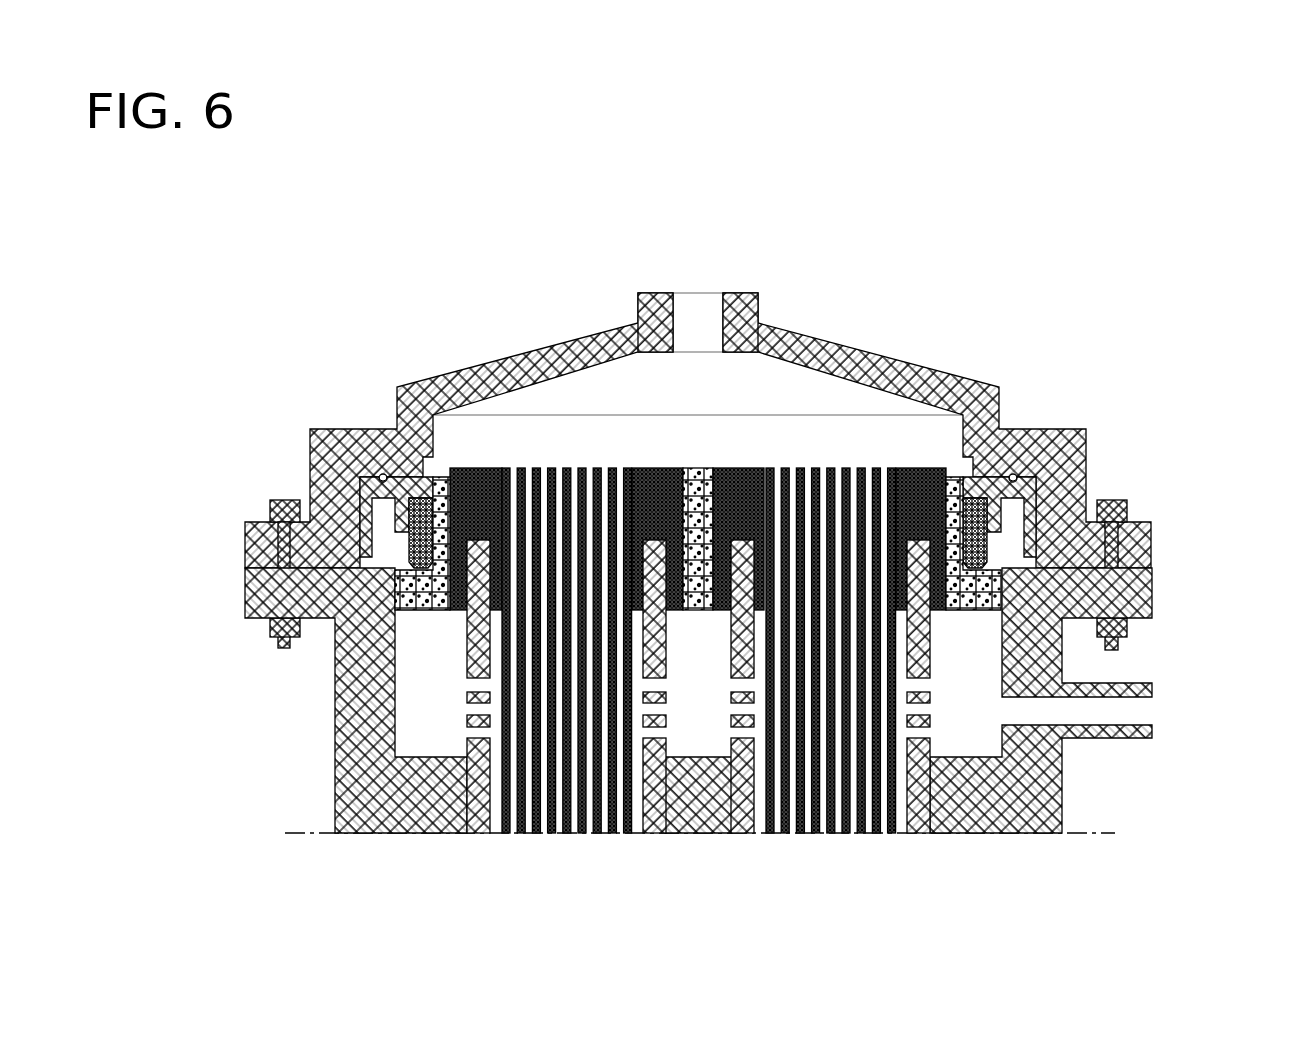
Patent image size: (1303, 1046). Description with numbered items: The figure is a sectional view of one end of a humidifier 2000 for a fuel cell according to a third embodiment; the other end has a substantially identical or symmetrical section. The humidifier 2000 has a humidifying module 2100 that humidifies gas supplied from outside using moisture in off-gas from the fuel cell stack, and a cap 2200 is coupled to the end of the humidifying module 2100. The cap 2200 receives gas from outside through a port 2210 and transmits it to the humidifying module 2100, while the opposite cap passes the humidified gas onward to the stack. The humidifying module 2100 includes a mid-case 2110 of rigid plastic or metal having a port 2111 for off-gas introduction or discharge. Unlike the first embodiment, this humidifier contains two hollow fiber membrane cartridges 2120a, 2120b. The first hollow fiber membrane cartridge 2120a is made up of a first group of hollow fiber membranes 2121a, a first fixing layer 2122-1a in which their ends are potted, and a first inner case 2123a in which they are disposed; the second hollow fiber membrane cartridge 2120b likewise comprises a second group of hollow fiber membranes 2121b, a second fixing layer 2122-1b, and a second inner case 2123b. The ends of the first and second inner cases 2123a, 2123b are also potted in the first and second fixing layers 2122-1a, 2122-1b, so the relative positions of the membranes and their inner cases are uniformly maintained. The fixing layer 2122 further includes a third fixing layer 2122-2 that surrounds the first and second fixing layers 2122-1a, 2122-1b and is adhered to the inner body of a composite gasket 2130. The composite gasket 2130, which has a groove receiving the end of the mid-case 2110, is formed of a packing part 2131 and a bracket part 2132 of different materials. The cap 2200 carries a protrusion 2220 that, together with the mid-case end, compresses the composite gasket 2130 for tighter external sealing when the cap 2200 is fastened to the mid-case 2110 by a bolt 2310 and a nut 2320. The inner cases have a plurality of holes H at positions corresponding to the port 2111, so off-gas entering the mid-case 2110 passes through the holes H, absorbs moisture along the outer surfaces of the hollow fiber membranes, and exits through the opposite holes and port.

The humidifier 2000 is at (747, 188).
The humidifying module 2100 is at (678, 700).
The mid-case 2110 is at (387, 791).
The port 2111 is at (1095, 733).
The first hollow fiber membrane cartridge 2120a is at (529, 524).
The second hollow fiber membrane cartridge 2120b is at (973, 558).
The first group of hollow fiber membranes 2121a is at (593, 472).
The second group of hollow fiber membranes 2121b is at (873, 472).
The fixing layer 2122 is at (788, 413).
The first fixing layer 2122-1a is at (645, 480).
The second fixing layer 2122-1b is at (752, 483).
The third fixing layer 2122-2 is at (700, 490).
The first inner case 2123a is at (658, 545).
The second inner case 2123b is at (915, 557).
The composite gasket 2130 is at (699, 491).
The packing part 2131 is at (380, 495).
The bracket part 2132 is at (409, 548).
The cap 2200 is at (698, 393).
The port 2210 is at (735, 303).
The protrusion 2220 is at (383, 480).
The bolt 2310 is at (1127, 508).
The nut 2320 is at (1127, 628).
The hole H is at (462, 683).